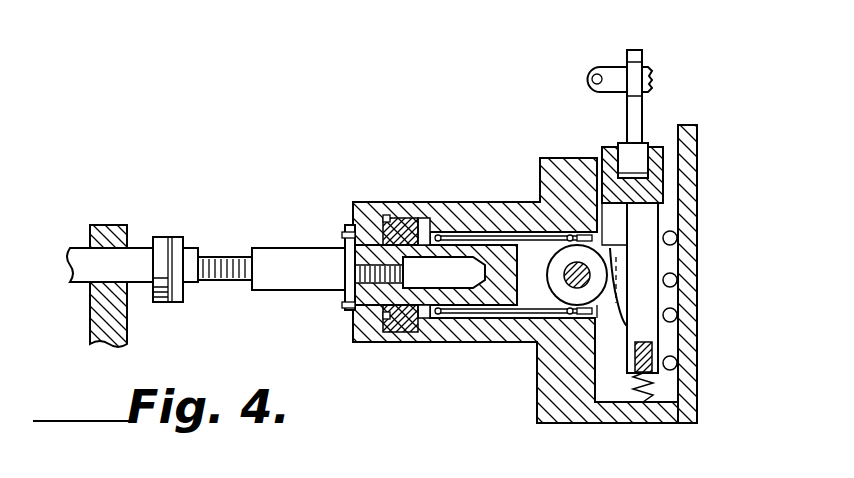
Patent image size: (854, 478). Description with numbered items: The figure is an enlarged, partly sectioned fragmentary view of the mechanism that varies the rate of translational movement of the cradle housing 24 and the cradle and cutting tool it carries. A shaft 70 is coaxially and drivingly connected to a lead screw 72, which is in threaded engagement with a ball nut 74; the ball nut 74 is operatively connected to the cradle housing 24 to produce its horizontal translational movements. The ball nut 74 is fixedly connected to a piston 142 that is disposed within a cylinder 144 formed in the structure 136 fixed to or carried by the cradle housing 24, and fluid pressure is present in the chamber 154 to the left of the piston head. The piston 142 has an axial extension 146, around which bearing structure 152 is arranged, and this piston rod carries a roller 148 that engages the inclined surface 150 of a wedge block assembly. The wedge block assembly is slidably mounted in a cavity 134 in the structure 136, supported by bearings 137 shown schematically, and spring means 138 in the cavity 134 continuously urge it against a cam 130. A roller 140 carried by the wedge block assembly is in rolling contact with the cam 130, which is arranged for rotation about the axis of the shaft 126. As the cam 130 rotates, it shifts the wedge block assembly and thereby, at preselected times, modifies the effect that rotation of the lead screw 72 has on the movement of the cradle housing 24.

The cradle housing 24 is at (79, 339).
The shaft 70 is at (80, 250).
The lead screw 72 is at (224, 281).
The ball nut 74 is at (283, 291).
The structure 136 is at (483, 344).
The cavity 134 is at (597, 383).
The cylinder 144 is at (413, 219).
The piston 142 is at (383, 323).
The chamber 154 is at (387, 216).
The axial extension 146 is at (477, 236).
The bearing structure 152 is at (569, 233).
The roller 140 is at (645, 143).
The shaft 126 is at (585, 77).
The cam 130 is at (643, 51).
The bearings 137 is at (679, 249).
The inclined surface 150 is at (620, 326).
The roller 148 is at (613, 245).
The spring means 138 is at (650, 396).